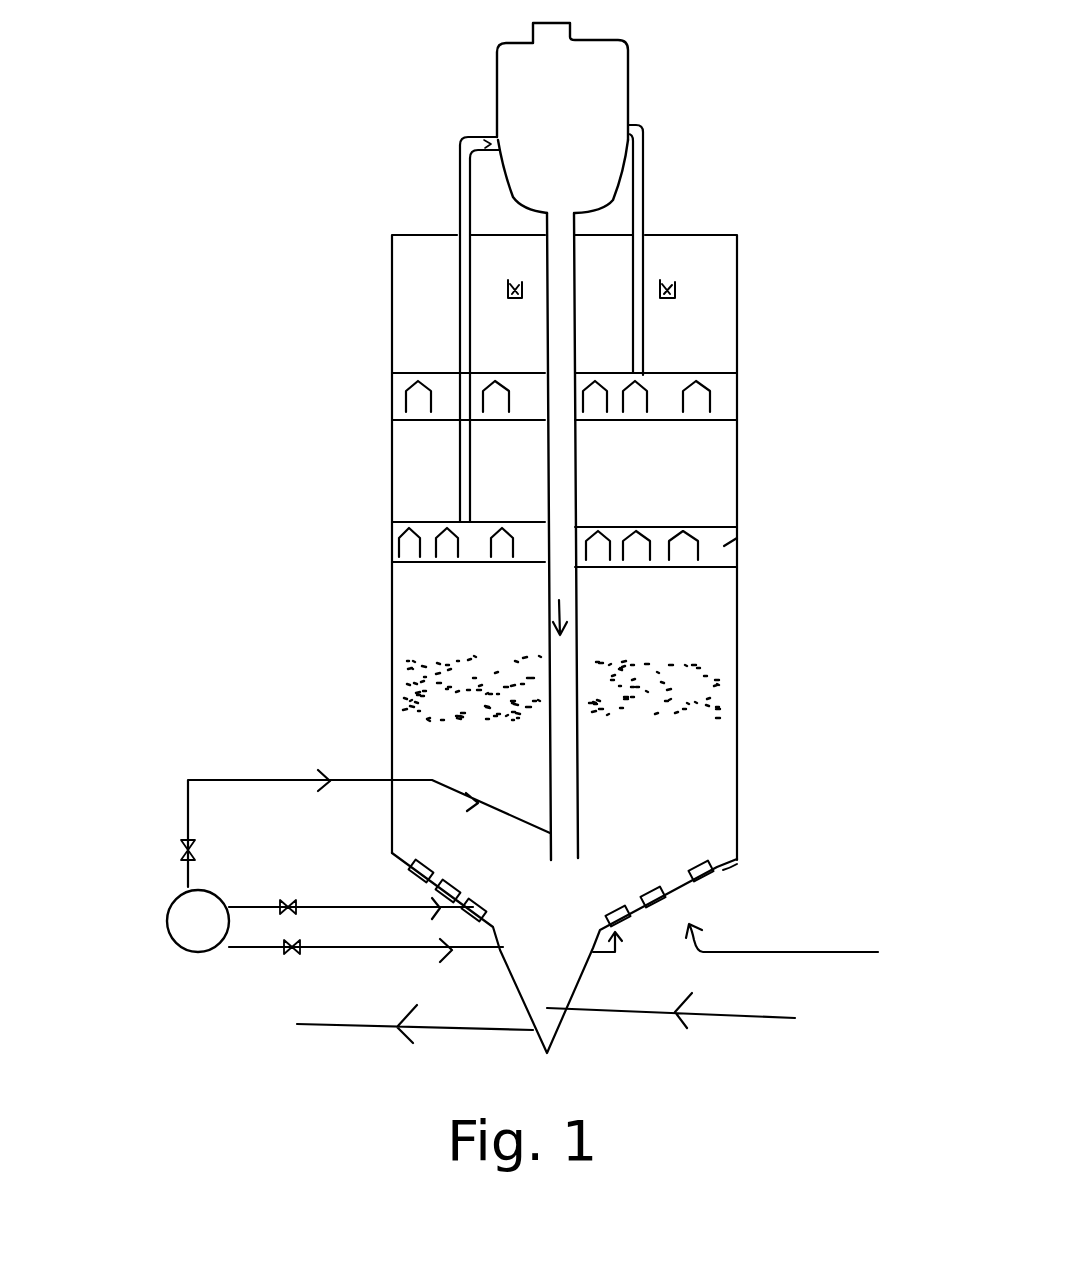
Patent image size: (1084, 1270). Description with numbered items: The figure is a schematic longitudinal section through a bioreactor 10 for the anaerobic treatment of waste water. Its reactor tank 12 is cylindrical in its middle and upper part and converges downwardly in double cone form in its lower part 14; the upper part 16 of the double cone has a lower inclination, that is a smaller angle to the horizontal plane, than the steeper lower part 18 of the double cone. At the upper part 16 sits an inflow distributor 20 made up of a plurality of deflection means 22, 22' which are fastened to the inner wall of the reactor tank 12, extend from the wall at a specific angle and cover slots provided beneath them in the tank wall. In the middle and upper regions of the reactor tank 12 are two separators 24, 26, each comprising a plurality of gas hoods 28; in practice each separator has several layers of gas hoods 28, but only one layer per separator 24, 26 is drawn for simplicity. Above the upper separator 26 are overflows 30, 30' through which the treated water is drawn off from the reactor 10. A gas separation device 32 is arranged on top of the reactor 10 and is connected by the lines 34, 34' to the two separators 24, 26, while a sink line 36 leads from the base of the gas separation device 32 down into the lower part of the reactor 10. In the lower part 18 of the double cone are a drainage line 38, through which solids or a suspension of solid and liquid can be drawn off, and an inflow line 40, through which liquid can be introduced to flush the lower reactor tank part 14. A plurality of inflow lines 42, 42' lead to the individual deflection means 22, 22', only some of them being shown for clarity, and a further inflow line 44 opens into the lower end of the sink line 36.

The bioreactor 10 is at (298, 548).
The reactor tank 12 is at (740, 728).
The lower part of the reactor tank 14 is at (765, 951).
The upper part of the double cone 16 is at (723, 870).
The lower part of the double cone 18 is at (580, 985).
The inflow distributor 20 is at (658, 857).
The deflection means 22 is at (765, 870).
The deflection means 22' is at (329, 811).
The separator 24 is at (725, 542).
The separator 26 is at (725, 398).
The gas hoods 28 is at (400, 380).
The overflow 30 is at (778, 255).
The overflow 30' is at (392, 268).
The gas separation device 32 is at (605, 103).
The line 34 is at (758, 250).
The line 34' is at (381, 329).
The sink line 36 is at (560, 297).
The drainage line 38 is at (310, 1030).
The inflow line 40 is at (770, 1018).
The inflow line 42 is at (269, 951).
The inflow line 42' is at (285, 998).
The inflow line 44 is at (357, 780).